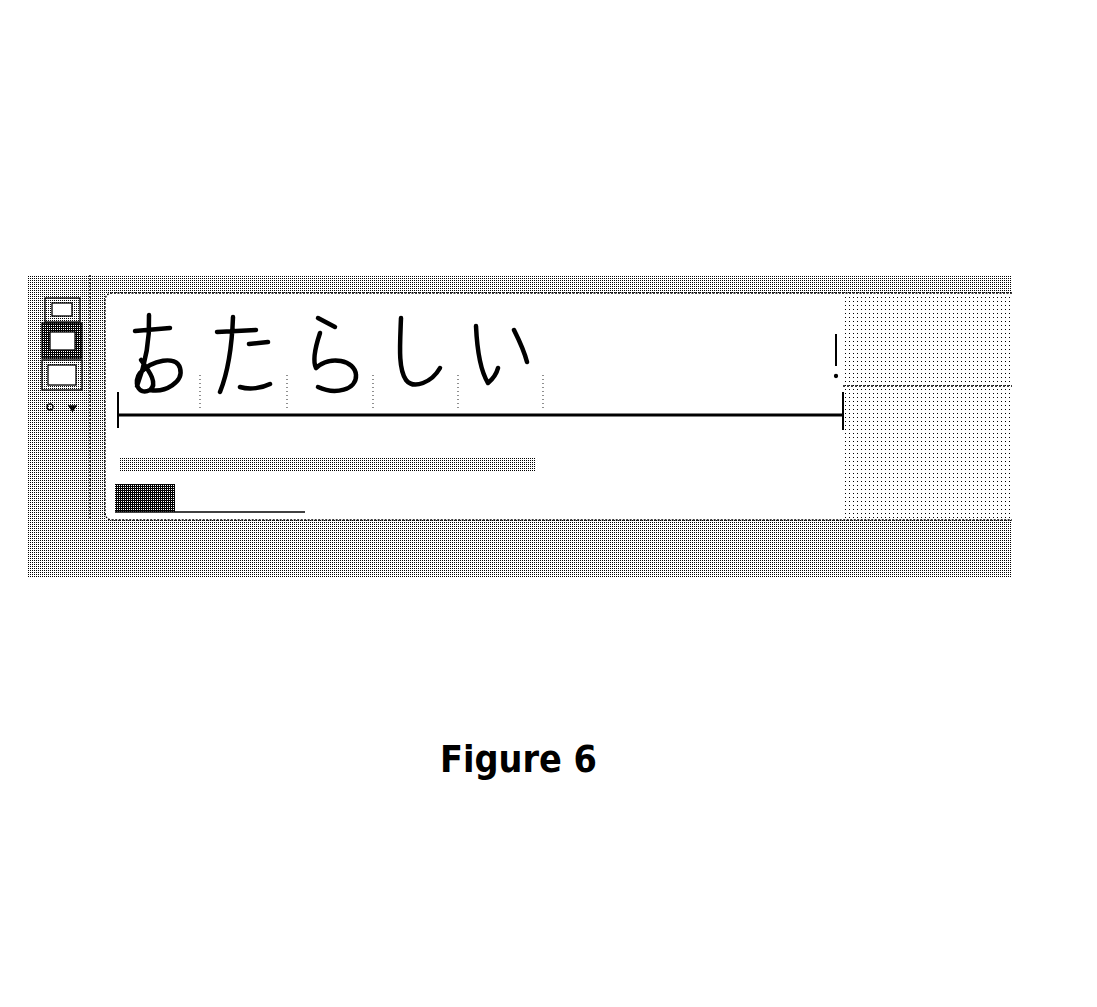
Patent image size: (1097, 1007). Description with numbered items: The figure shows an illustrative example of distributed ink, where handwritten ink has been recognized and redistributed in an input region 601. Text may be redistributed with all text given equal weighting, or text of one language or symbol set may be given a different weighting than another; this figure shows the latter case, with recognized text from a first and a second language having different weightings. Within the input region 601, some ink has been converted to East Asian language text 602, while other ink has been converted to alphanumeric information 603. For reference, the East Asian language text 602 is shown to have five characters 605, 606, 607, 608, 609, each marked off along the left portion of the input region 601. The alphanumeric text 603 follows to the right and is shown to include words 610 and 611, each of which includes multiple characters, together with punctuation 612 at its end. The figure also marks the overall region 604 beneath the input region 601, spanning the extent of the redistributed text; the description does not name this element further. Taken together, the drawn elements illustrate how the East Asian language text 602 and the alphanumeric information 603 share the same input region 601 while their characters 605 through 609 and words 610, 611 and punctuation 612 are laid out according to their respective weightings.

The input region 601 is at (952, 278).
The East Asian language text 602 is at (542, 262).
The alphanumeric information 603 is at (848, 262).
The handwriting input area 604 is at (847, 590).
The character 605 is at (215, 148).
The character 606 is at (297, 148).
The character 607 is at (378, 148).
The character 608 is at (460, 148).
The character 609 is at (543, 148).
The word 610 is at (697, 148).
The word 611 is at (830, 148).
The punctuation 612 is at (836, 334).